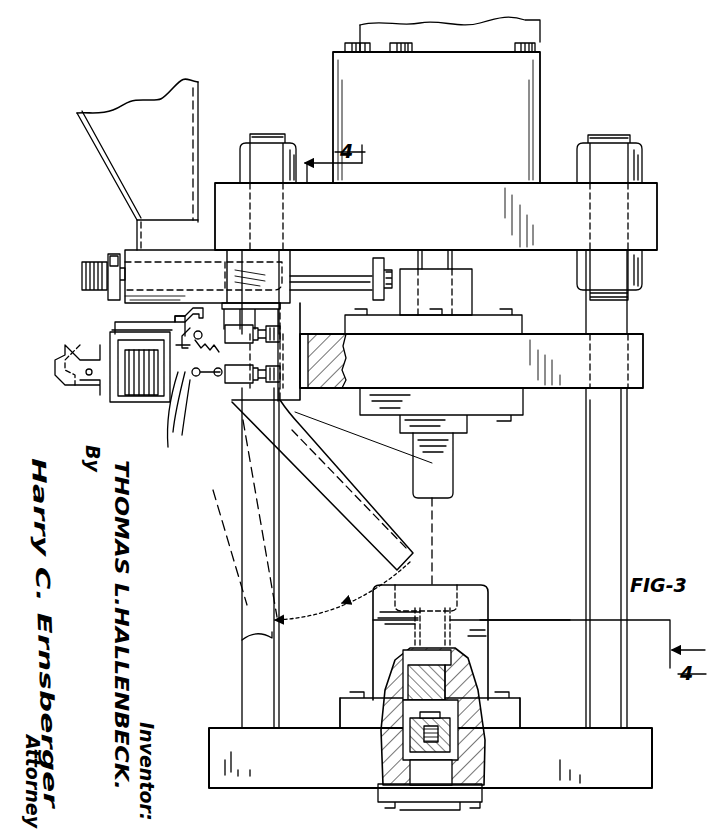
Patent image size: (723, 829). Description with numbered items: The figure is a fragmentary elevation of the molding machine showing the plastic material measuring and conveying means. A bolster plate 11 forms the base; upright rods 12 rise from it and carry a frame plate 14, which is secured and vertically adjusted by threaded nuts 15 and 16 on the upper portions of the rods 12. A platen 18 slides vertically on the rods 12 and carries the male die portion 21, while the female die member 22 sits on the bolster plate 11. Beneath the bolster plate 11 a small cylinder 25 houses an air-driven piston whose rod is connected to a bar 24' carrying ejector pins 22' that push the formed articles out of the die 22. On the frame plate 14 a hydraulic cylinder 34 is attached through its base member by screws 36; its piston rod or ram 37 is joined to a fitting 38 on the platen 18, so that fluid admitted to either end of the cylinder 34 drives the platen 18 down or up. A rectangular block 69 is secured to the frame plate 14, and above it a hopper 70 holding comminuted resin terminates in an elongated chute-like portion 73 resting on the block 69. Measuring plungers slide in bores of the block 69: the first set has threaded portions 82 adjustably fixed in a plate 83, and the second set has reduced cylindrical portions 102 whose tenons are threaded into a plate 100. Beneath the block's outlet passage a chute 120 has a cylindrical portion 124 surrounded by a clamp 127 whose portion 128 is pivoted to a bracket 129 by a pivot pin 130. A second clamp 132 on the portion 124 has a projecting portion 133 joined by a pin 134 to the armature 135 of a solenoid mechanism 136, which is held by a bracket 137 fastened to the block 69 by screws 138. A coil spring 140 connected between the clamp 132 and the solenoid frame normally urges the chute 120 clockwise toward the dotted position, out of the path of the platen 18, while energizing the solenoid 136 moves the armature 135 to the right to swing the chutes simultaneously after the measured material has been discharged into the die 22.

The bolster plate 11 is at (652, 770).
The upright rods 12 is at (639, 420).
The frame plate 14 is at (657, 200).
The nut 15 is at (641, 290).
The nut 16 is at (660, 160).
The platen 18 is at (492, 361).
The male die portion 21 is at (453, 452).
The die member 22 is at (471, 642).
The ejector pins 22' is at (442, 716).
The bar 24' is at (429, 727).
The small cylinder 25 is at (455, 800).
The cylinder 34 is at (530, 36).
The screws 36 is at (395, 43).
The piston rod or ram 37 is at (452, 257).
The fitting 38 is at (472, 280).
The rectangular block 69 is at (222, 256).
The hopper 70 is at (87, 137).
The chute-like portion 73 is at (137, 238).
The threaded portions 82 is at (85, 270).
The plate 83 is at (112, 262).
The plate 100 is at (380, 258).
The cylindrical portions 102 is at (360, 278).
The chute 120 is at (336, 476).
The cylindrical portion 124 is at (267, 392).
The clamp 127 is at (280, 330).
The pivoted portion 128 is at (252, 363).
The bracket 129 is at (222, 320).
The pivot pin 130 is at (194, 340).
The second clamp 132 is at (345, 360).
The projecting portion 133 is at (210, 376).
The pin 134 is at (200, 416).
The armature 135 is at (197, 426).
The solenoid mechanism 136 is at (118, 382).
The bracket 137 is at (115, 316).
The screws 138 is at (170, 322).
The coil spring 140 is at (150, 410).